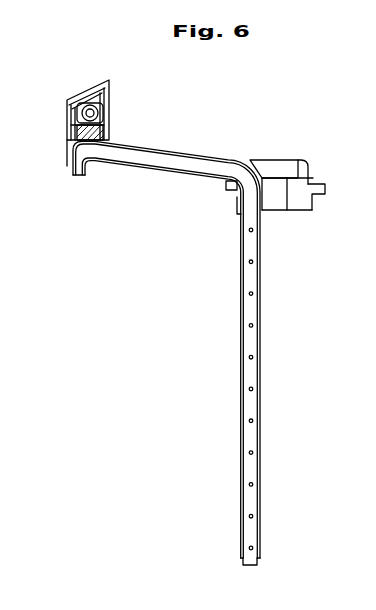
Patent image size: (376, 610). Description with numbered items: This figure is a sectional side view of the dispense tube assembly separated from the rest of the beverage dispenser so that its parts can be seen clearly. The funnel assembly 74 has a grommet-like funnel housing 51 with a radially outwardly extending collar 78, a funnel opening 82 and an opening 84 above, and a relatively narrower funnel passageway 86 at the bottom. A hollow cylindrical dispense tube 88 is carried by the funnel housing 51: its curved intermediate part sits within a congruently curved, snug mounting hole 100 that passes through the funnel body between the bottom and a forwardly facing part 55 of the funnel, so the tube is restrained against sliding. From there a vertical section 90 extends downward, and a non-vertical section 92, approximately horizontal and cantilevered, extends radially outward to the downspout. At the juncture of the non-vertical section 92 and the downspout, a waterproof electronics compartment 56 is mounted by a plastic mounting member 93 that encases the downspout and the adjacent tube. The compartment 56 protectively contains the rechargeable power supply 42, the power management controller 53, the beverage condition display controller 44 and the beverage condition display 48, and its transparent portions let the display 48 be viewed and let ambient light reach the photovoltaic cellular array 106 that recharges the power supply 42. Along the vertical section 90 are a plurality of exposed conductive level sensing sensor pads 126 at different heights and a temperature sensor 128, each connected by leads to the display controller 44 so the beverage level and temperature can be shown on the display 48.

The rechargeable power supply 42 is at (110, 132).
The beverage condition display controller 44 is at (73, 108).
The beverage condition display 48 is at (108, 93).
The funnel housing 51 is at (303, 172).
The power management controller 53 is at (303, 212).
The forwardly facing part of the funnel 55 is at (73, 172).
The waterproof electronics compartment 56 is at (108, 113).
The funnel assembly 74 is at (208, 229).
The collar 78 is at (327, 190).
The funnel opening 82 is at (292, 170).
The opening of the funnel 84 is at (267, 165).
The funnel passageway 86 is at (277, 198).
The dispense tube 88 is at (234, 277).
The vertical section 90 is at (253, 252).
The non-vertical section 92 is at (157, 150).
The plastic mounting member 93 is at (67, 160).
The mounting hole 100 is at (226, 186).
The photovoltaic cellular array 106 is at (85, 93).
The level sensing sensor pads 126 is at (254, 324).
The temperature sensor 128 is at (254, 356).